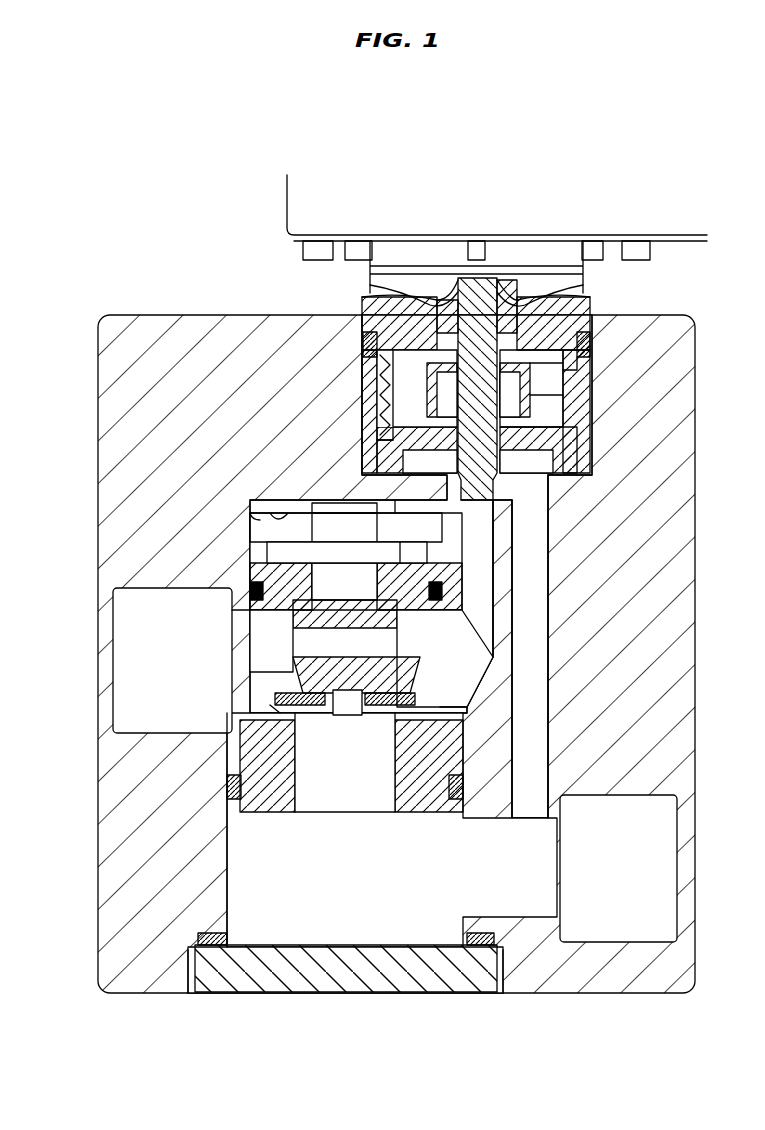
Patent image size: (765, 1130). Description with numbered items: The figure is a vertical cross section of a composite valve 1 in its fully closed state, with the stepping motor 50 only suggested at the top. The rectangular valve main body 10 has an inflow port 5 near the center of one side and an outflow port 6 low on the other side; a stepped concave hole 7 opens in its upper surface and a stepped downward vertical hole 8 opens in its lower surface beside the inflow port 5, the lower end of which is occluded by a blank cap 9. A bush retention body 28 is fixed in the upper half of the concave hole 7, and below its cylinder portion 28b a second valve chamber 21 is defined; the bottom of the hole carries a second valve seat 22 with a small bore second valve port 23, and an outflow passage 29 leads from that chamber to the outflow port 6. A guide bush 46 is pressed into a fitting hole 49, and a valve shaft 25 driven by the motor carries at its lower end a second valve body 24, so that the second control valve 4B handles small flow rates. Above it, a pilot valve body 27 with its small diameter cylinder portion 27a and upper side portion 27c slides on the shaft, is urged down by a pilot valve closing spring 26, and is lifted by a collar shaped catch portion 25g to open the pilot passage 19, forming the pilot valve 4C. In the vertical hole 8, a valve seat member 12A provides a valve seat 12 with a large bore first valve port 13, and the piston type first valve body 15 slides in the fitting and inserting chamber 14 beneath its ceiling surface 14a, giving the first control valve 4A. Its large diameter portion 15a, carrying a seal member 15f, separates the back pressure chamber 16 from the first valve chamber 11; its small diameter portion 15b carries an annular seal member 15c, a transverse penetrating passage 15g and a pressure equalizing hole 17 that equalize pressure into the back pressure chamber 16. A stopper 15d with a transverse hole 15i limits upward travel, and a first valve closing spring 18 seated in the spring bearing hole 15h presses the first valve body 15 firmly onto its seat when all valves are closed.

The composite valve 1 is at (192, 155).
The valve main body 10 is at (98, 408).
The inflow port 5 is at (138, 715).
The outflow port 6 is at (633, 945).
The stepped downward vertical hole 8 is at (232, 868).
The blank cap 9 is at (278, 990).
The first valve chamber 11 is at (262, 645).
The valve seat 12 is at (306, 715).
The valve seat member 12A is at (422, 800).
The first valve port 13 is at (300, 790).
The fitting and inserting chamber 14 is at (255, 545).
The ceiling surface 14a is at (255, 528).
The first valve body 15 is at (268, 555).
The large diameter portion 15a is at (347, 552).
The small diameter portion 15b is at (452, 702).
The annular seal member 15c is at (283, 698).
The stopper 15d is at (290, 548).
The seal member 15f is at (250, 603).
The transverse penetrating passage 15g is at (390, 655).
The spring bearing hole 15h is at (402, 617).
The transverse hole 15i is at (410, 556).
The back pressure chamber 16 is at (348, 530).
The pressure equalizing hole 17 is at (345, 612).
The first valve closing spring 18 is at (345, 506).
The pilot passage 19 is at (398, 500).
The second valve chamber 21 is at (412, 392).
The second valve seat 22 is at (555, 480).
The second valve port 23 is at (520, 553).
The second valve body 24 is at (495, 506).
The valve shaft 25 is at (560, 300).
The collar shaped catch portion 25g is at (400, 428).
The pilot valve closing spring 26 is at (378, 368).
The pilot valve body 27 is at (585, 477).
The small diameter cylinder portion 27a is at (566, 400).
The upper side portion 27c is at (532, 307).
The bush retention body 28 is at (592, 338).
The cylinder portion 28b is at (580, 377).
The outflow passage 29 is at (550, 612).
The first control valve 4A is at (270, 695).
The second control valve 4B is at (505, 462).
The pilot valve 4C is at (580, 363).
The guide bush 46 is at (370, 290).
The fitting hole 49 is at (365, 310).
The stepping motor 50 is at (283, 222).
The stepped concave hole 7 is at (363, 345).